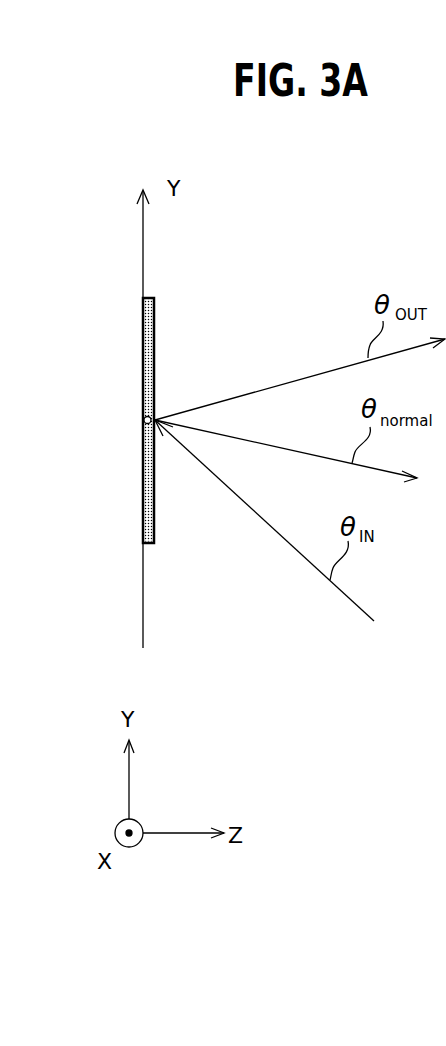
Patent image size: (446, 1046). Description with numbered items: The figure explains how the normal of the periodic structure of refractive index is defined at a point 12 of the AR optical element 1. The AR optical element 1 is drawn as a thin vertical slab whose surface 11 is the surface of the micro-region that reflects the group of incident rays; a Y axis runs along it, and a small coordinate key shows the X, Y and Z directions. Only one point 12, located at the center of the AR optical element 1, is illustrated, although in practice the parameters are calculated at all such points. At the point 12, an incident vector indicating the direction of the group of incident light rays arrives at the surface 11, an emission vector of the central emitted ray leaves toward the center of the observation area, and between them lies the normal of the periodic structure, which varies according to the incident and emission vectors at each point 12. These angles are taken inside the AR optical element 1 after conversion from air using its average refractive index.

The AR optical element 1 is at (155, 298).
The surface 11 is at (155, 342).
The point 12 is at (144, 420).